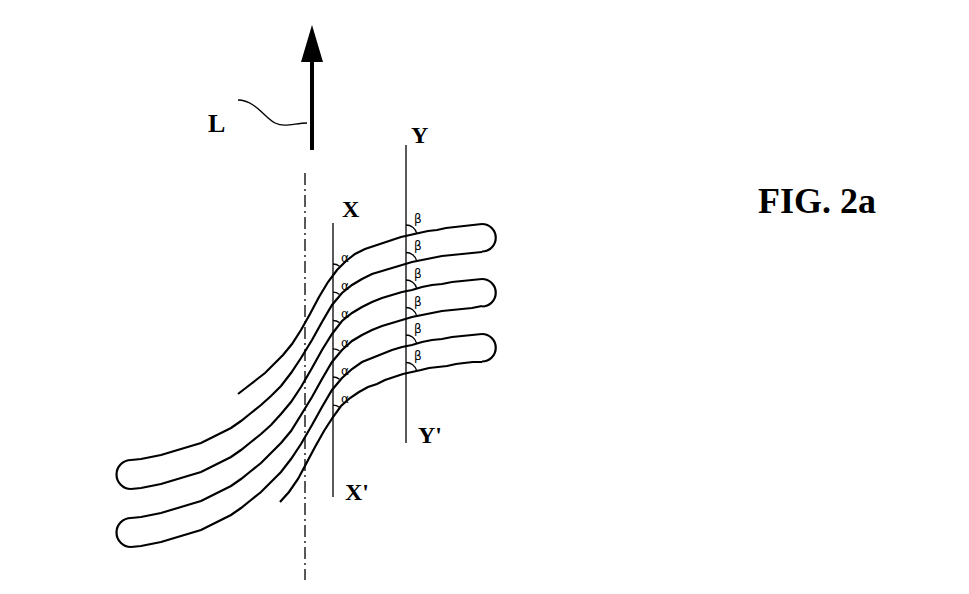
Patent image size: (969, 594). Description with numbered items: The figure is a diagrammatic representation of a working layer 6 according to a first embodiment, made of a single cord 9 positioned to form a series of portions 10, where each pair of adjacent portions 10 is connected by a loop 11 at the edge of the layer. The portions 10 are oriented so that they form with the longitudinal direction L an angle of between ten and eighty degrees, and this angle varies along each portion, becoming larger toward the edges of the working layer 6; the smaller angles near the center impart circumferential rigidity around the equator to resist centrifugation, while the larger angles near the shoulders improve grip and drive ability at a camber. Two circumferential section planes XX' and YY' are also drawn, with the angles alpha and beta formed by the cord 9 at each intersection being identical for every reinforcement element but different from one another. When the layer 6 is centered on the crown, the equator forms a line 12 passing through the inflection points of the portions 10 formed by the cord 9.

The working layer 6 is at (562, 270).
The cord 9 is at (272, 346).
The portions 10 is at (226, 428).
The loops 11 is at (117, 473).
The line 12 is at (305, 268).